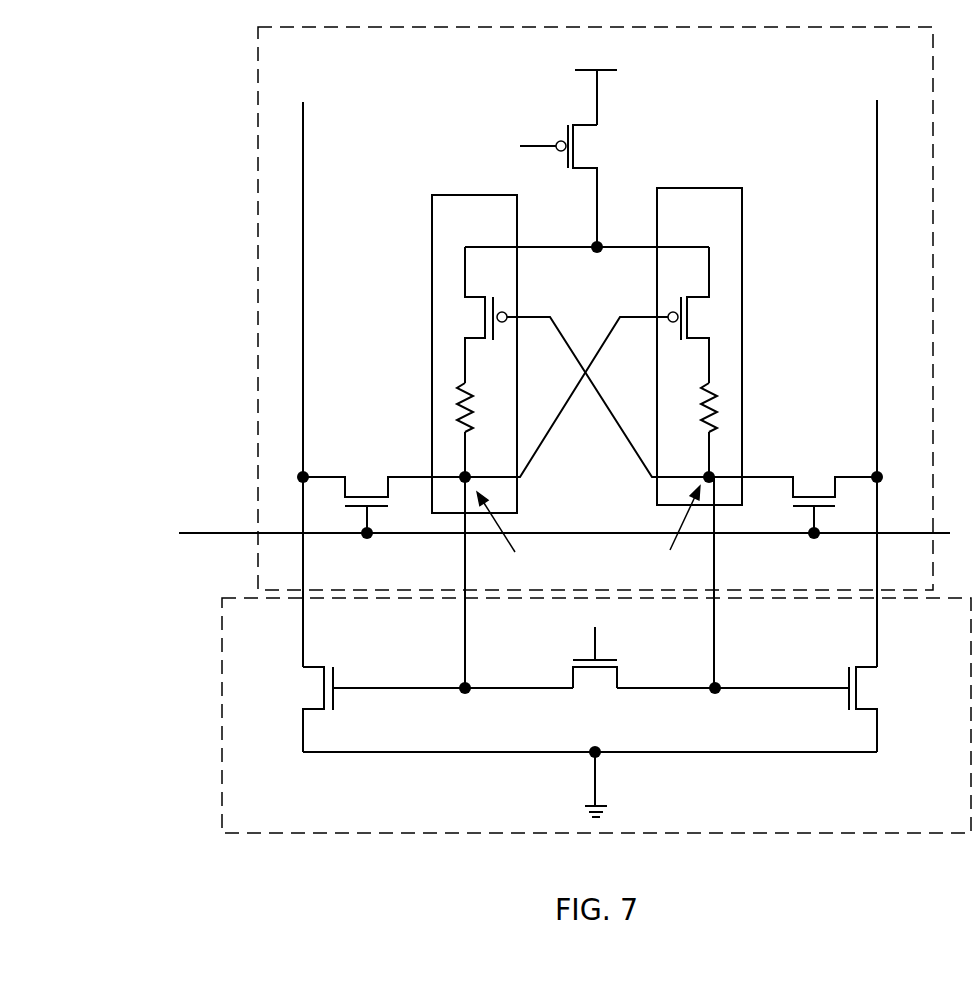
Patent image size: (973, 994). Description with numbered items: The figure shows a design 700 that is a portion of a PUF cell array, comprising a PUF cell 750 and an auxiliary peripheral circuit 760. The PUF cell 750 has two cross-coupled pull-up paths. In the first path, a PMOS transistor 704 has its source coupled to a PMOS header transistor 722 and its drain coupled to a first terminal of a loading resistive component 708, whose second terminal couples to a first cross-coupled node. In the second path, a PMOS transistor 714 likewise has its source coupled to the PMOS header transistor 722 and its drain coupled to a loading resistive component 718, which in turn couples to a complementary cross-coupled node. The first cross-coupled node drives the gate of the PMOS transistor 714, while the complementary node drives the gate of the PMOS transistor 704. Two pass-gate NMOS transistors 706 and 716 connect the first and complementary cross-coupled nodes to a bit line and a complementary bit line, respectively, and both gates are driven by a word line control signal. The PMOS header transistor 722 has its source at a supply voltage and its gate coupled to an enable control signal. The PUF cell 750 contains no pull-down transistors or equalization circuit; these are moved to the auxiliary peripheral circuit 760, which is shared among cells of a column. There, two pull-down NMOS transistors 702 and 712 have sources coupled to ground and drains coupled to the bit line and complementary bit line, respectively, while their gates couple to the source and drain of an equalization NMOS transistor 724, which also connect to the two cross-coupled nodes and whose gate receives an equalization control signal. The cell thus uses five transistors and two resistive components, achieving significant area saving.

The design 700 is at (138, 92).
The pull-down NMOS transistor 702 is at (294, 702).
The PMOS transistor 704 is at (457, 326).
The pass-gate NMOS transistor 706 is at (359, 468).
The loading resistive component 708 is at (444, 403).
The pull-down NMOS transistor 712 is at (889, 693).
The PMOS transistor 714 is at (721, 323).
The pass-gate NMOS transistor 716 is at (821, 468).
The loading resistive component 718 is at (731, 405).
The PMOS header transistor 722 is at (608, 142).
The equalization NMOS transistor 724 is at (596, 700).
The PUF cell 750 is at (595, 308).
The auxiliary peripheral circuit 760 is at (596, 715).